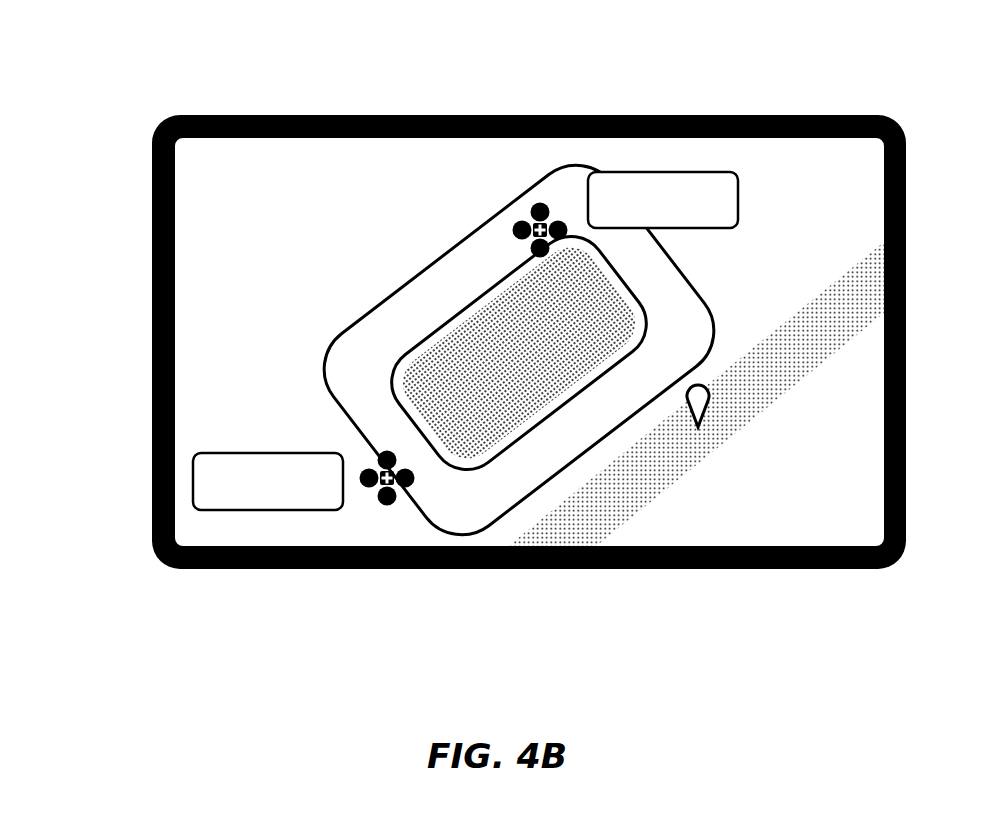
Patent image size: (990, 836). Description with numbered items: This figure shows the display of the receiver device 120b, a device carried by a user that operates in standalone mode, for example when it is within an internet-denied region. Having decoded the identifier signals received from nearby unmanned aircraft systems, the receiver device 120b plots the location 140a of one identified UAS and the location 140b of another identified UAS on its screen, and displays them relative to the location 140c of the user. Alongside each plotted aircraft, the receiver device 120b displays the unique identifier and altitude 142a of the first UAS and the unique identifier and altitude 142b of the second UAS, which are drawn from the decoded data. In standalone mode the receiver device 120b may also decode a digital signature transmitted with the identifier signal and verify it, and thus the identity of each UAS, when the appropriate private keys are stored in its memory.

The receiver device 120b is at (60, 83).
The location of identified UAS 140a is at (530, 212).
The location of identified UAS 140b is at (390, 506).
The location of the user 140c is at (710, 398).
The unique identifier and altitude 142a is at (740, 182).
The unique identifier and altitude 142b is at (268, 453).